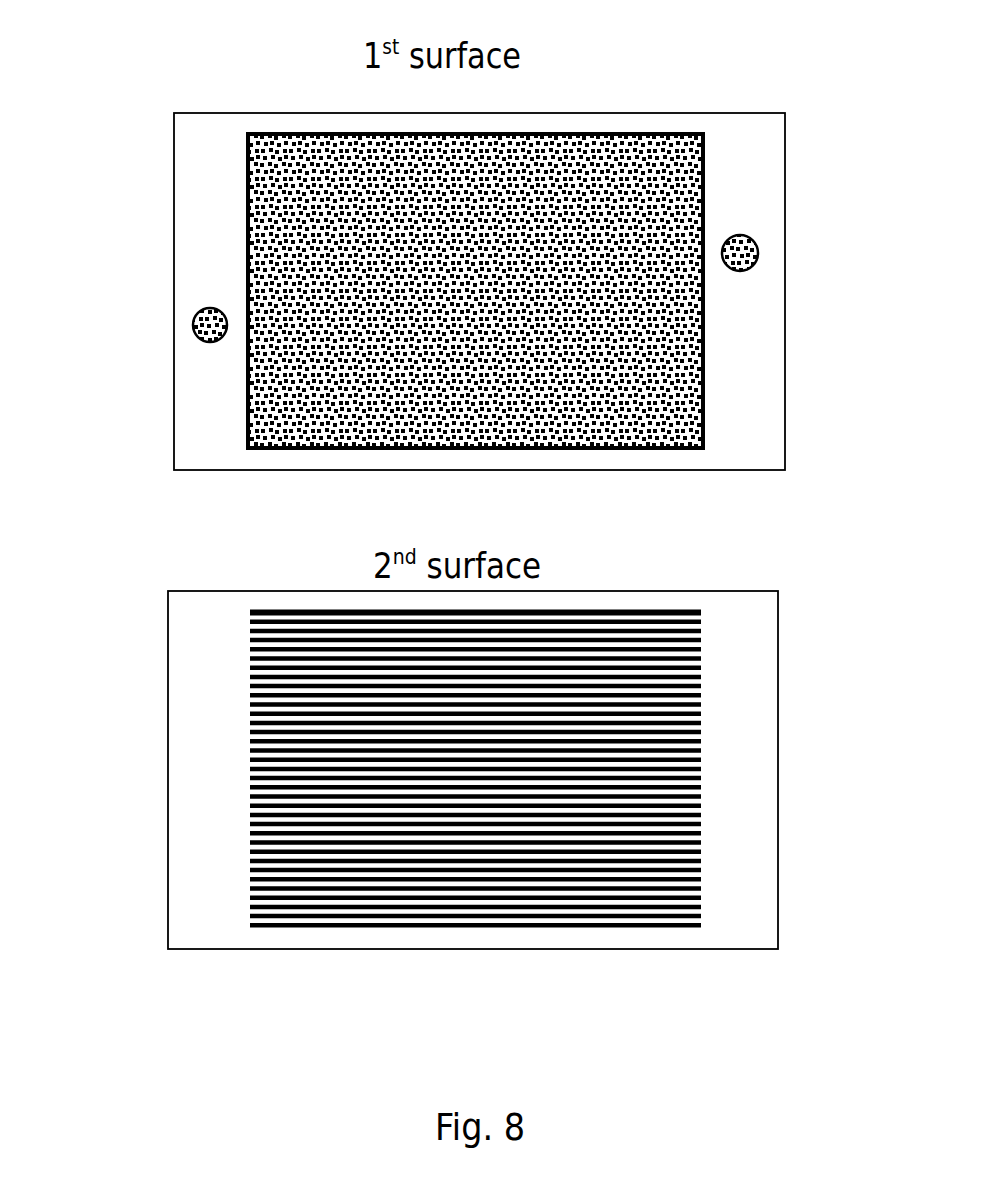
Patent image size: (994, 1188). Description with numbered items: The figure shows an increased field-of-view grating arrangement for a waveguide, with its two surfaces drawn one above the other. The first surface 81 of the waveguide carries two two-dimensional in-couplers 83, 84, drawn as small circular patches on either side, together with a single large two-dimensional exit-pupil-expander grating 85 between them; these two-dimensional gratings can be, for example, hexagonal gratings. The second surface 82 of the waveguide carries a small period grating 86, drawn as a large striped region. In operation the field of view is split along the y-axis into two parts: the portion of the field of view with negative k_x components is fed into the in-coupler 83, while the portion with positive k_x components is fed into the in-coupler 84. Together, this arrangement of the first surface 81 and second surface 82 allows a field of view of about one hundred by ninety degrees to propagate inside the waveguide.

The first surface 81 is at (178, 443).
The second surface 82 is at (167, 902).
The 2D in-coupler 83 is at (188, 326).
The 2D in-coupler 84 is at (746, 239).
The 2D EPE grating 85 is at (690, 408).
The small period grating 86 is at (665, 758).